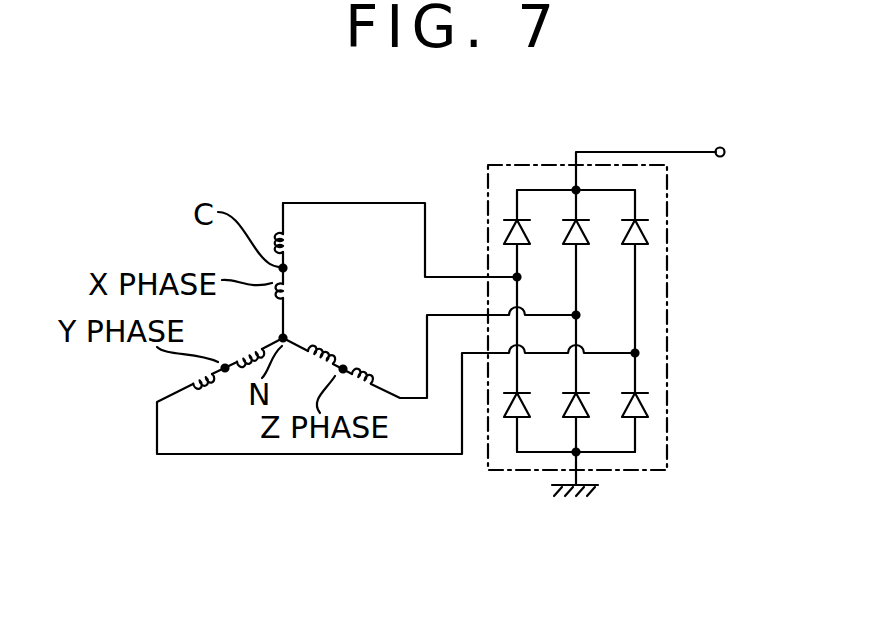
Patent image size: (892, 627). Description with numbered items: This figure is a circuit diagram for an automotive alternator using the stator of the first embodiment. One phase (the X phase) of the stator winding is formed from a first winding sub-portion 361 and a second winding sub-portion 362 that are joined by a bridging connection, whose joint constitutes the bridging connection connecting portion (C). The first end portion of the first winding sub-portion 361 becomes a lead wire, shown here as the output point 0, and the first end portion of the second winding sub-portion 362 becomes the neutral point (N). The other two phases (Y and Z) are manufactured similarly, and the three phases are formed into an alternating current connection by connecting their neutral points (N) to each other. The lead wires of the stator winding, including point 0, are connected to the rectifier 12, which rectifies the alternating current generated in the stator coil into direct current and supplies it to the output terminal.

The first winding sub-portion 361 is at (288, 242).
The second winding sub-portion 362 is at (288, 290).
The rectifier 12 is at (667, 283).
The output node 0 is at (464, 275).